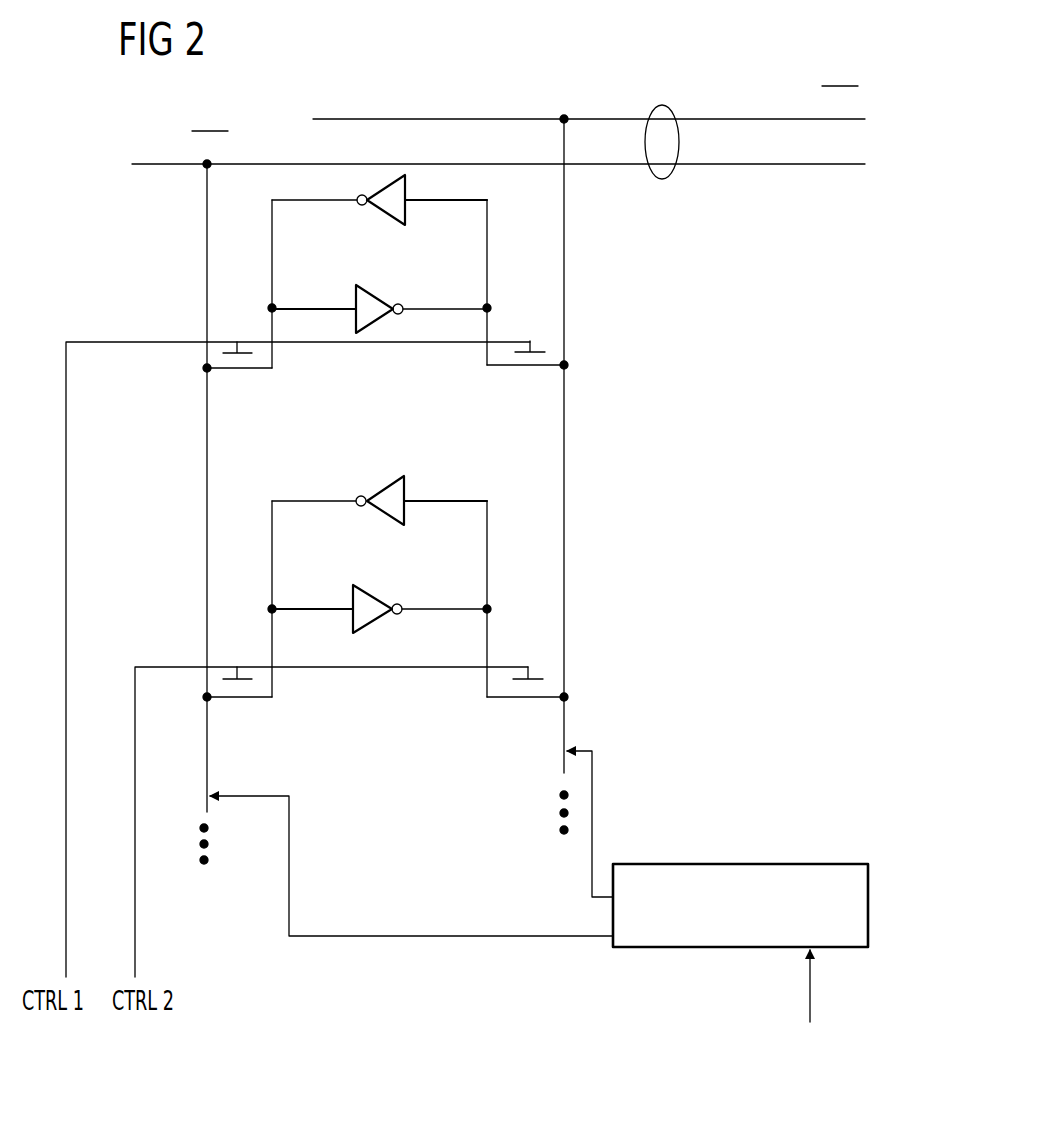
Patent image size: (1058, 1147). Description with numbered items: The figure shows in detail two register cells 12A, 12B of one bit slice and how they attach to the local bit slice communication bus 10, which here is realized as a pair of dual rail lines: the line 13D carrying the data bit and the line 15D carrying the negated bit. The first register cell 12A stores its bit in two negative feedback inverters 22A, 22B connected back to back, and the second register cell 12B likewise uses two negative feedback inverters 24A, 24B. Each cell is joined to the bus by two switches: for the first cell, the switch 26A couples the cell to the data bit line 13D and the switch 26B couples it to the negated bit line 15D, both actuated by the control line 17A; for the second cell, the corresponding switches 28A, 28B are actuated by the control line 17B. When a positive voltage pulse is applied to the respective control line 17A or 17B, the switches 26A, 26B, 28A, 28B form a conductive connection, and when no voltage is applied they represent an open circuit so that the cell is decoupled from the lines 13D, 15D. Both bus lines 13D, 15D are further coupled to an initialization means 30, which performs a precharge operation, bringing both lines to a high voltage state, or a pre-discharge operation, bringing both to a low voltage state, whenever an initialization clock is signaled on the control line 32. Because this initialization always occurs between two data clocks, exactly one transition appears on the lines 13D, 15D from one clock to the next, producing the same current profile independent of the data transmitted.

The local bit slice communication bus 10 is at (667, 106).
The register cell 12A is at (508, 271).
The register cell 12B is at (507, 578).
The bit output line 13D is at (564, 318).
The negated bit output line 15D is at (207, 282).
The control line 17A is at (66, 493).
The control line 17B is at (135, 738).
The negative feedback inverter 22A is at (380, 228).
The negative feedback inverter 22B is at (378, 285).
The negative feedback inverter 24A is at (380, 482).
The negative feedback inverter 24B is at (374, 590).
The switch 26A is at (525, 379).
The switch 26B is at (244, 379).
The switch 28A is at (523, 705).
The switch 28B is at (244, 709).
The initialization means 30 is at (740, 864).
The control line 32 is at (810, 985).